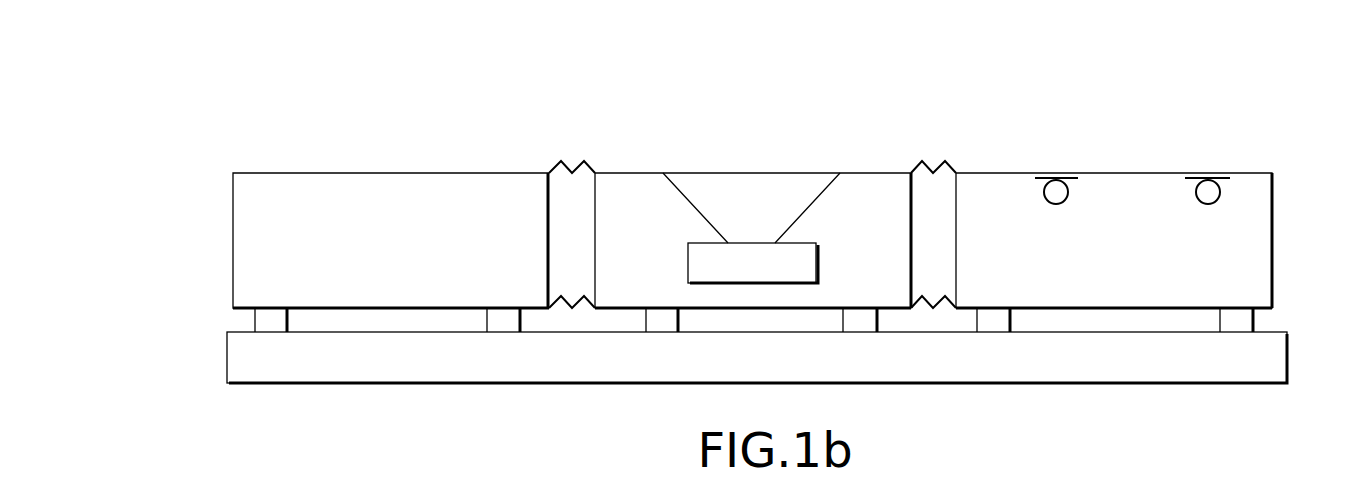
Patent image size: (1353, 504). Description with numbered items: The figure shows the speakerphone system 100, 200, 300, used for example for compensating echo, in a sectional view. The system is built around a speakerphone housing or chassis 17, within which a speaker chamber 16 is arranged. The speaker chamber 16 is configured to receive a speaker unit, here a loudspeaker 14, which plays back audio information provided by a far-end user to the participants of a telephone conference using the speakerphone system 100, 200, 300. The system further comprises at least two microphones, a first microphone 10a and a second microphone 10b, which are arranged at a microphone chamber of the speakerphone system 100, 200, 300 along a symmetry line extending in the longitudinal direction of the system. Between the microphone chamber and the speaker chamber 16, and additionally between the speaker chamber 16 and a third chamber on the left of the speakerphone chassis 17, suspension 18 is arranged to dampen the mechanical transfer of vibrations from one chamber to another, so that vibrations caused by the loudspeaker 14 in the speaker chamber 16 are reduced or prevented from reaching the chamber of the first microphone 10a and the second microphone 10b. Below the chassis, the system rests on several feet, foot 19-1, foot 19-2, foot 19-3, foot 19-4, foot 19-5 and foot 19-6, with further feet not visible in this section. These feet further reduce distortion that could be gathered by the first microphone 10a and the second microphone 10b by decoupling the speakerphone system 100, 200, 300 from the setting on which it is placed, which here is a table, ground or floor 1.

The speakerphone system 100 is at (751, 227).
The speakerphone system 200 is at (751, 227).
The speakerphone system 300 is at (406, 90).
The speakerphone chassis 17 is at (370, 192).
The suspension 18 is at (572, 172).
The speaker chamber 16 is at (880, 247).
The loudspeaker 14 is at (688, 262).
The first microphone 10a is at (1056, 178).
The second microphone 10b is at (1205, 178).
The foot 19-1 is at (262, 321).
The foot 19-2 is at (492, 320).
The foot 19-3 is at (657, 322).
The foot 19-4 is at (868, 322).
The foot 19-5 is at (1004, 320).
The foot 19-6 is at (1247, 320).
The floor 1 is at (780, 366).